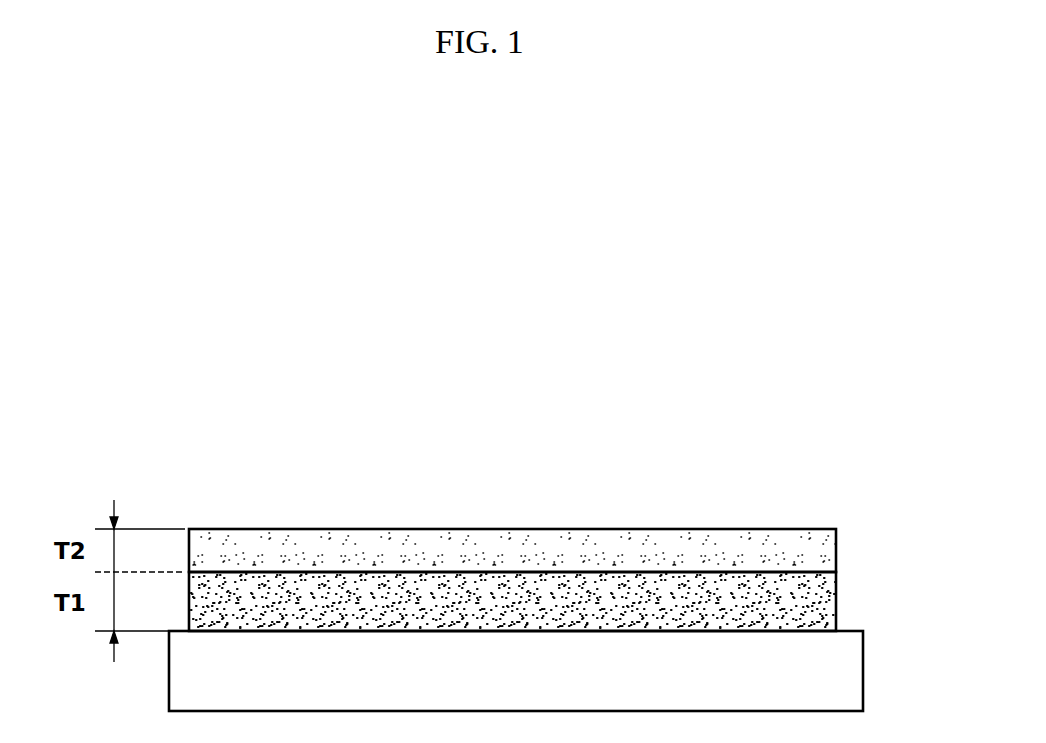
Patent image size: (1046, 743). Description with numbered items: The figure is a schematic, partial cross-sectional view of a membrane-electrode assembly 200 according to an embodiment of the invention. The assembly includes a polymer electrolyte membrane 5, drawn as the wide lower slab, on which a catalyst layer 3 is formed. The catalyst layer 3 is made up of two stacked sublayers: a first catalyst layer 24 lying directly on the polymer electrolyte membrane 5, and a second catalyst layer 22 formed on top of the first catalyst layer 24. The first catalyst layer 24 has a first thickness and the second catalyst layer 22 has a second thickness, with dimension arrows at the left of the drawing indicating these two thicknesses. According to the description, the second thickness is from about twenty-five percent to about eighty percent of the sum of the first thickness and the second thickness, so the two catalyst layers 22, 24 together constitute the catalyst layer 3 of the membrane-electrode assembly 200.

The abrasive article 200 is at (803, 488).
The catalyst layer 3 is at (567, 580).
The second catalyst layer 22 is at (827, 552).
The first catalyst layer 24 is at (827, 603).
The polymer electrolyte membrane 5 is at (855, 672).